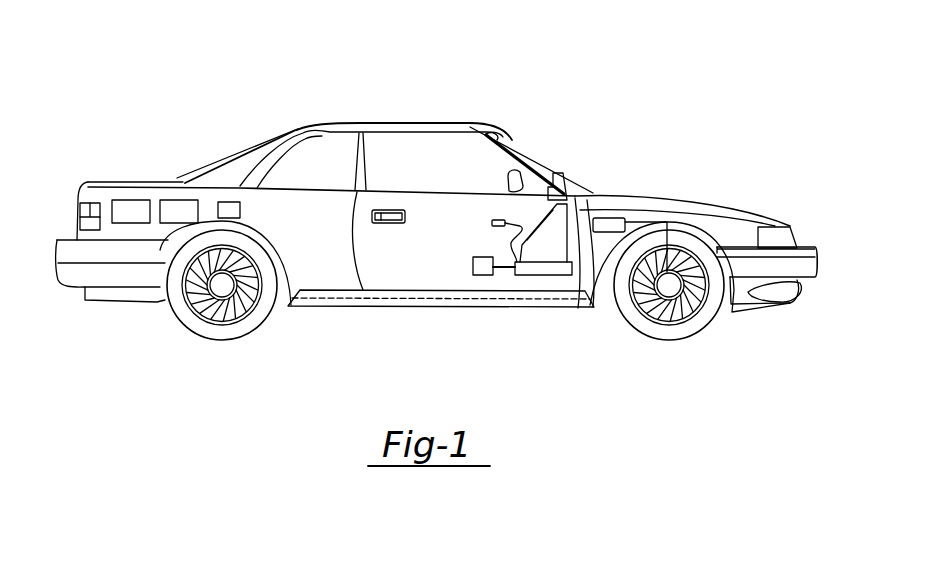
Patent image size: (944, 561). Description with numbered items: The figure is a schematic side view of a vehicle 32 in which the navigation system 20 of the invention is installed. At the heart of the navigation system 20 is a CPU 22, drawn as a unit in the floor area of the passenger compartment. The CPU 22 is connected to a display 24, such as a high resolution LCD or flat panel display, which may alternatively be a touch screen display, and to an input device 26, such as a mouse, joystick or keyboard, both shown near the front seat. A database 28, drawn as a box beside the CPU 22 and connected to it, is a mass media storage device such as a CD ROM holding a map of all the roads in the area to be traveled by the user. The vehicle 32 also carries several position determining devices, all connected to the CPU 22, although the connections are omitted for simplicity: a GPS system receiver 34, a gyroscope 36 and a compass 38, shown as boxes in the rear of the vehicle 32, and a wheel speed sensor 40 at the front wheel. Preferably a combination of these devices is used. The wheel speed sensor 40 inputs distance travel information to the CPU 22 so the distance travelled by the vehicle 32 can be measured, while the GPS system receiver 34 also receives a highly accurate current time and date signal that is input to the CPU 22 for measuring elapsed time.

The navigation system 20 is at (180, 84).
The CPU 22 is at (542, 276).
The display 24 is at (537, 220).
The input device 26 is at (492, 220).
The database 28 is at (482, 273).
The vehicle 32 is at (397, 125).
The GPS system receiver 34 is at (129, 203).
The gyroscope 36 is at (173, 203).
The compass 38 is at (228, 203).
The wheel speed sensor 40 is at (610, 218).